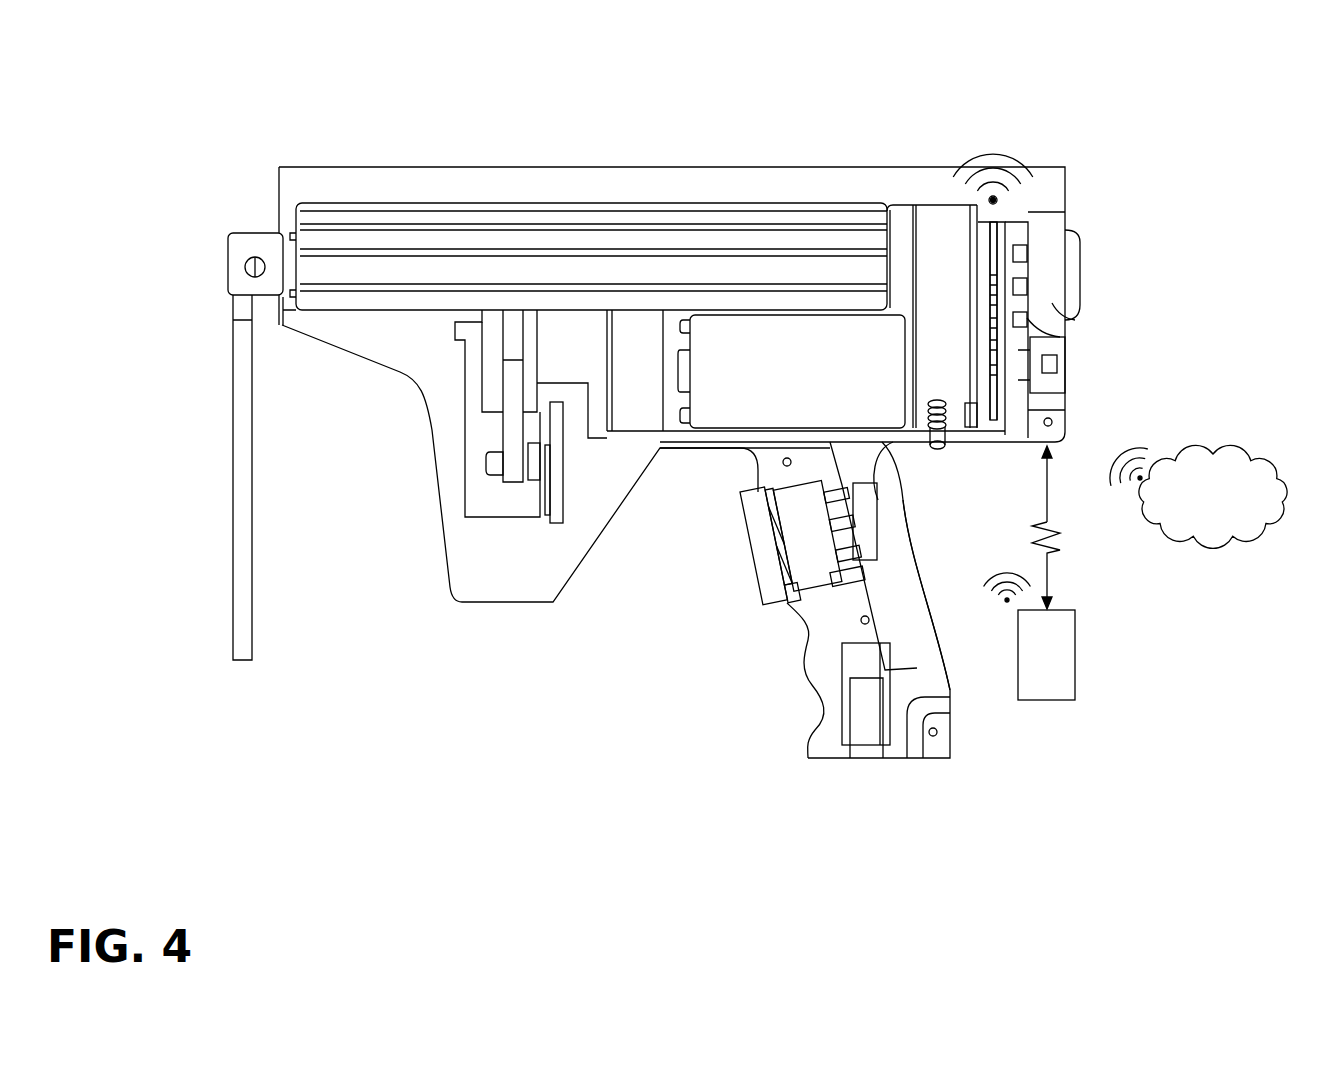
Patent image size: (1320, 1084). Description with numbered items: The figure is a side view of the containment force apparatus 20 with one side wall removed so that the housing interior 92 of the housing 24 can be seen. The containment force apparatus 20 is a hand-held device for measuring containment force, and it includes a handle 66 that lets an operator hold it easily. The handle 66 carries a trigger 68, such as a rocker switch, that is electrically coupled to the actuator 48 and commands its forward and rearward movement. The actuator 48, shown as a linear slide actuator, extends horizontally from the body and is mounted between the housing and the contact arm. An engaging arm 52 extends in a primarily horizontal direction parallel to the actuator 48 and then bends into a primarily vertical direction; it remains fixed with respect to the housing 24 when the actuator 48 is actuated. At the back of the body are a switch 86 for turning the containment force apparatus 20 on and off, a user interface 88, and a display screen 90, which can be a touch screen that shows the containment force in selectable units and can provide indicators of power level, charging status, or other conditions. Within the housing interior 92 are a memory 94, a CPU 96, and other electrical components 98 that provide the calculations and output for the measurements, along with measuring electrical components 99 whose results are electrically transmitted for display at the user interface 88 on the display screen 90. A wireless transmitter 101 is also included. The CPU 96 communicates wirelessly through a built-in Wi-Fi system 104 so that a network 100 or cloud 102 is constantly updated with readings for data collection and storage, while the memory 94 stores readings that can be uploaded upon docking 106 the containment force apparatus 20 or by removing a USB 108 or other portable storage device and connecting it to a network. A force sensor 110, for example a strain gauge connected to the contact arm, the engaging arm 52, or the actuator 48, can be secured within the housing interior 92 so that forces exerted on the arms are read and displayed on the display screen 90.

The containment force apparatus 20 is at (305, 70).
The housing 24 is at (608, 167).
The actuator 48 is at (777, 248).
The engaging arm 52 is at (242, 615).
The handle 66 is at (920, 625).
The trigger 68 is at (763, 553).
The switch 86 is at (1073, 378).
The user interface 88 is at (1075, 320).
The display screen 90 is at (1082, 272).
The housing interior 92 is at (433, 357).
The memory 94 is at (1026, 253).
The CPU 96 is at (997, 248).
The other electrical components 98 is at (1060, 337).
The measuring electrical components 99 is at (530, 393).
The network 100 is at (1043, 678).
The wireless transmitter 101 is at (1003, 203).
The cloud 102 is at (1217, 480).
The Wi-Fi system 104 is at (969, 147).
The docking 106 is at (1042, 495).
The USB 108 is at (862, 725).
The force sensor 110 is at (552, 468).